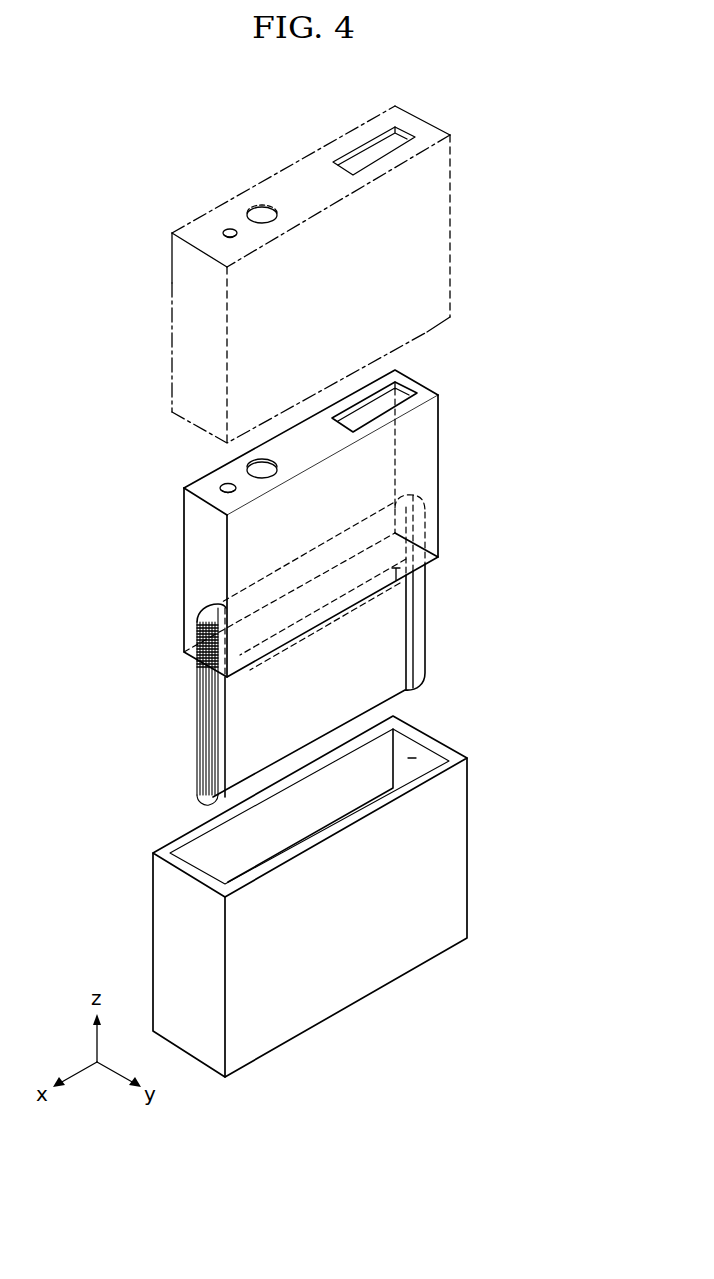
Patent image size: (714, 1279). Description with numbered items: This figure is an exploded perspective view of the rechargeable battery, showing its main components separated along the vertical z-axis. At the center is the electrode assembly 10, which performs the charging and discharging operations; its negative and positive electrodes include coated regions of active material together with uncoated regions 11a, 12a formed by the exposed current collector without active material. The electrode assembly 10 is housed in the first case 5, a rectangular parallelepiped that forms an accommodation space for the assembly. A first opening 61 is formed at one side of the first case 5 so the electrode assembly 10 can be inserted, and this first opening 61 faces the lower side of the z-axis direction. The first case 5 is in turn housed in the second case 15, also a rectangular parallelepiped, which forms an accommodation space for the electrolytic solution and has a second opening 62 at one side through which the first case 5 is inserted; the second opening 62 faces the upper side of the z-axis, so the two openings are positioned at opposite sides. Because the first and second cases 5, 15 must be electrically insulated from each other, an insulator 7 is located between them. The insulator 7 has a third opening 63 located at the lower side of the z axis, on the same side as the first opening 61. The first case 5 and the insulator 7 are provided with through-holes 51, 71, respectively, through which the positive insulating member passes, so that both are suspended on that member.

The first case 5 is at (183, 568).
The insulator 7 is at (450, 197).
The electrode assembly 10 is at (383, 662).
The uncoated region of the negative electrode 11a is at (217, 728).
The uncoated region of the positive electrode 12a is at (420, 618).
The second case 15 is at (455, 847).
The through-hole of the first case 51 is at (370, 398).
The first opening 61 is at (398, 578).
The second opening 62 is at (412, 758).
The third opening 63 is at (427, 332).
The through-hole of the insulator 71 is at (386, 133).